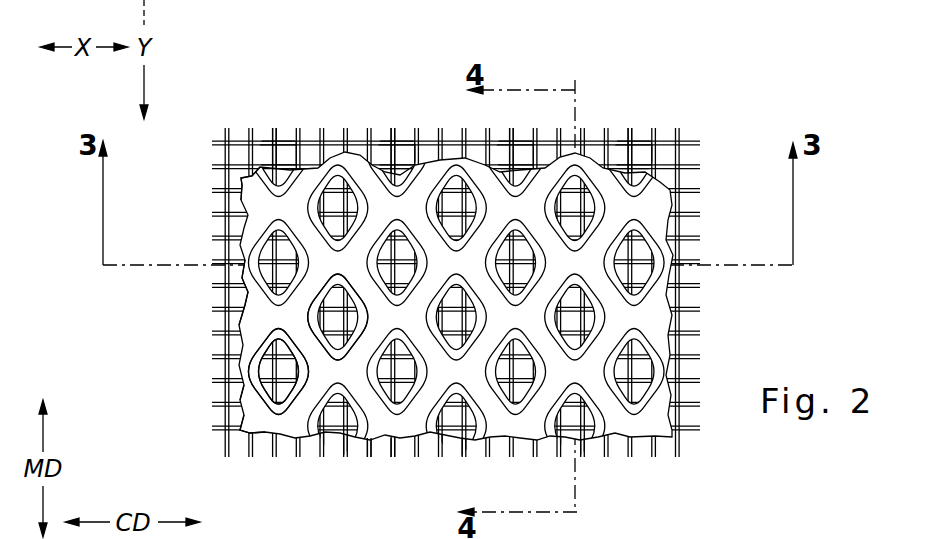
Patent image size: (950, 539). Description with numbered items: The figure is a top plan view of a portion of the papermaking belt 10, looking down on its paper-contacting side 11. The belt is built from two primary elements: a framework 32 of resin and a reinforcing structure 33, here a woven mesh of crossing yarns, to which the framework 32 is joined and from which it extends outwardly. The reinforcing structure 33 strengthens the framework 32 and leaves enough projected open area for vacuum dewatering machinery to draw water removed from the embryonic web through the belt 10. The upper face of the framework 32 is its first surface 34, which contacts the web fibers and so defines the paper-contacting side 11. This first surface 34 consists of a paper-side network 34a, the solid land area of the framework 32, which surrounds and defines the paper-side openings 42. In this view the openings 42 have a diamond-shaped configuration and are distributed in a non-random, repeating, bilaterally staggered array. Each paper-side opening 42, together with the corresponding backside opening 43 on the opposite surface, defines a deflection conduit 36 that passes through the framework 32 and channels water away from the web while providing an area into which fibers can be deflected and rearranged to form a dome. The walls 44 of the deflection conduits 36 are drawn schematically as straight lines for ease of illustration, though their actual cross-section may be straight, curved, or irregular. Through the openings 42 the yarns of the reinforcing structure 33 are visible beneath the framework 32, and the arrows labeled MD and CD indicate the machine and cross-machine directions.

The papermaking belt 10 is at (400, 117).
The paper-contacting side 11 is at (316, 172).
The framework 32 is at (252, 210).
The reinforcing structure 33 is at (627, 130).
The first surface 34 is at (250, 291).
The paper-side network 34a is at (253, 150).
The deflection conduits 36 is at (333, 420).
The paper-side openings 42 is at (246, 420).
The backside openings 43 is at (285, 372).
The walls 44 is at (397, 413).